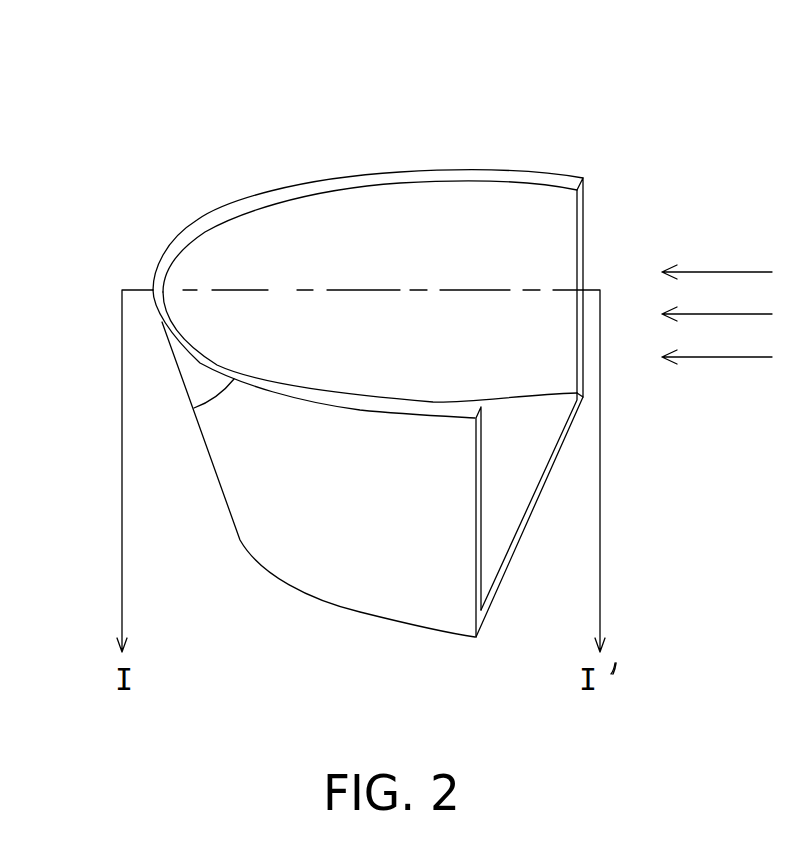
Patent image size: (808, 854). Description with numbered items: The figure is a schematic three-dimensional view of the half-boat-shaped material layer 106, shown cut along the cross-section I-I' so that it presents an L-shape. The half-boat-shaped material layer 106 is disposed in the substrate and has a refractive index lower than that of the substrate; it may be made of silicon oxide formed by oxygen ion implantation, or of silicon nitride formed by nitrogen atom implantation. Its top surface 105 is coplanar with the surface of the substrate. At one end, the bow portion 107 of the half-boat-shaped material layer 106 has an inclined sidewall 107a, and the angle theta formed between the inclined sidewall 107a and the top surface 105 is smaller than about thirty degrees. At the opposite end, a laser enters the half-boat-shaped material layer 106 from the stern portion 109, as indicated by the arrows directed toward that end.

The top surface 105 is at (360, 178).
The half-boat-shaped material layer 106 is at (414, 346).
The bow portion 107 is at (183, 210).
The inclined sidewall 107a is at (198, 427).
The stern portion 109 is at (585, 258).